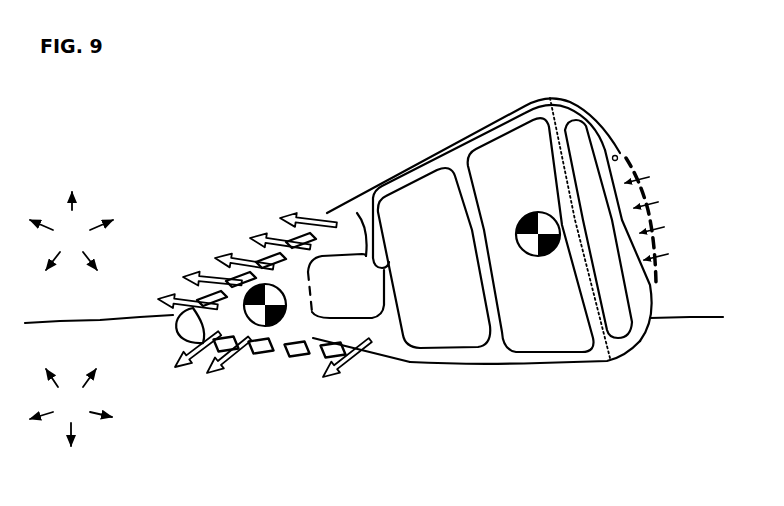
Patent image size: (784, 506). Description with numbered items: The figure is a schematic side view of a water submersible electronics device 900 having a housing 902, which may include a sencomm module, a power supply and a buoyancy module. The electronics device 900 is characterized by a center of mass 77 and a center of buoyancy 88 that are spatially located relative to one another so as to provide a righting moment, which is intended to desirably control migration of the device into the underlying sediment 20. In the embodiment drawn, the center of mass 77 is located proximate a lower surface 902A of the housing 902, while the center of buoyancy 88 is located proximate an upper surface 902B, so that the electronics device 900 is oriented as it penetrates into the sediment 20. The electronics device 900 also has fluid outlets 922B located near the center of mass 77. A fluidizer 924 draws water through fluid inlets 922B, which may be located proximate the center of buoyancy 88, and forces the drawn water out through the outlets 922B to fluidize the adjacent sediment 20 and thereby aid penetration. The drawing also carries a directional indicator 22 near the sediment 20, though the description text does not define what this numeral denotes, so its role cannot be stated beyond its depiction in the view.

The electronics device 900 is at (179, 127).
The housing 902 is at (534, 82).
The lower surface 902A is at (647, 359).
The upper surface 902B is at (510, 380).
The fluid outlets 922B is at (642, 156).
The fluidizer 924 is at (351, 250).
The expansion direction 22 is at (71, 231).
The sediment 20 is at (71, 407).
The center of mass 77 is at (265, 305).
The center of buoyancy 88 is at (538, 234).